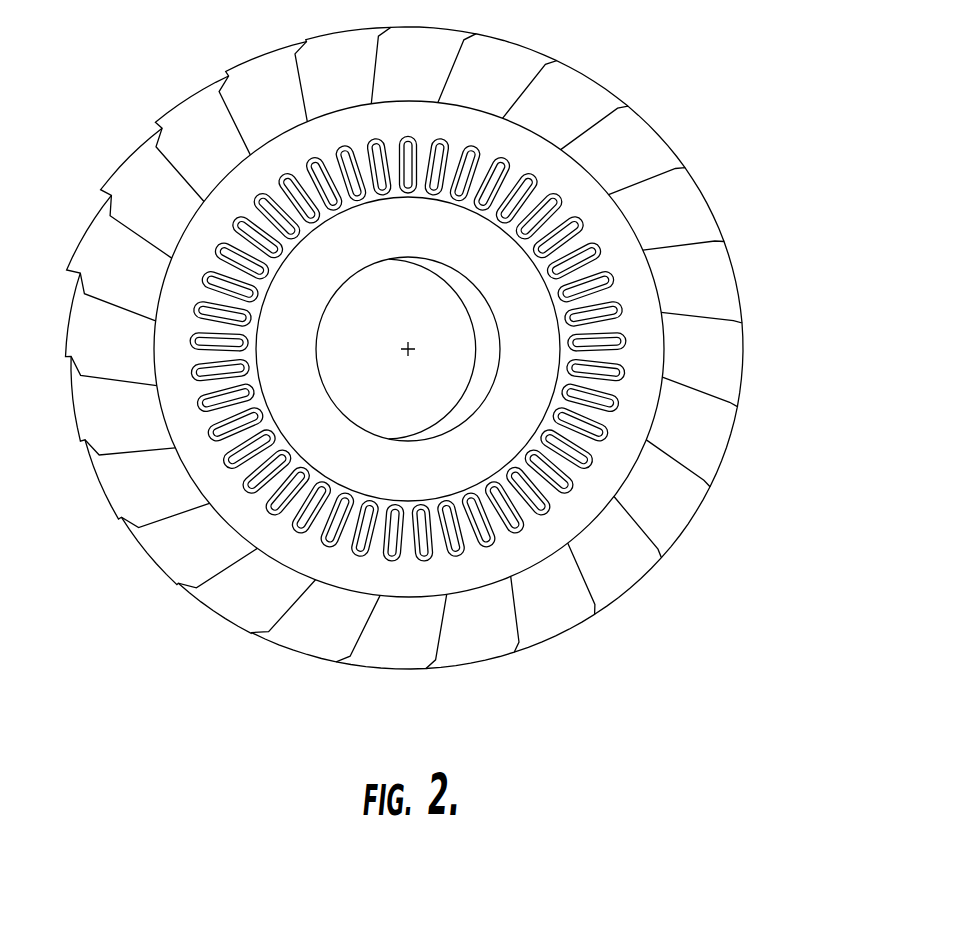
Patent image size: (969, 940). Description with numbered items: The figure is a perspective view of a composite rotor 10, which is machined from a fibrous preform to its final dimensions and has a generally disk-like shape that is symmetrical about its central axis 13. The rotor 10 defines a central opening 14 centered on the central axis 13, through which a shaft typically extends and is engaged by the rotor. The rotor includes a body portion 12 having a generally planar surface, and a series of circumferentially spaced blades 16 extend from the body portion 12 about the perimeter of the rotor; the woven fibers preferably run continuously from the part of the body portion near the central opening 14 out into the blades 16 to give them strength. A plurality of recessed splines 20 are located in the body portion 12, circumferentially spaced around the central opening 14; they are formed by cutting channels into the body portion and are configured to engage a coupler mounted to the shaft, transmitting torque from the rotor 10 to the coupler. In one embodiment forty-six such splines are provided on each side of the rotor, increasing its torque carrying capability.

The composite rotor 10 is at (715, 82).
The body portion 12 is at (640, 412).
The central axis 13 is at (414, 348).
The central opening 14 is at (425, 297).
The blades 16 is at (678, 512).
The recessed splines 20 is at (512, 532).